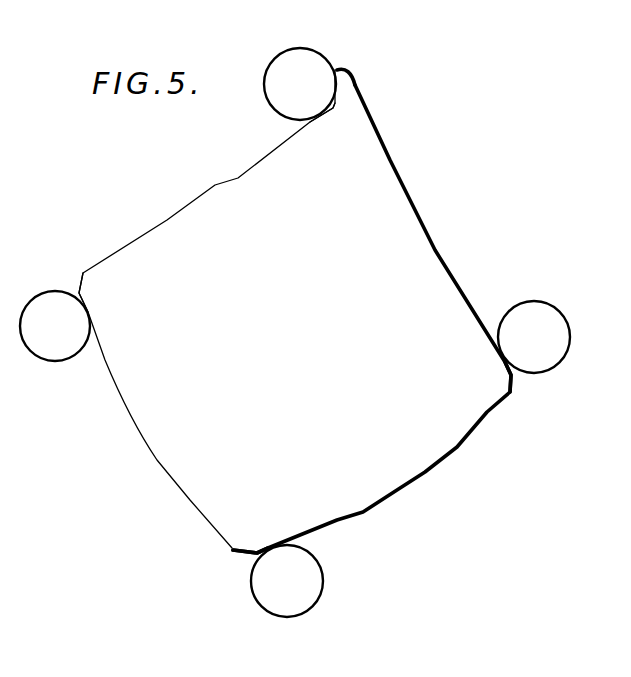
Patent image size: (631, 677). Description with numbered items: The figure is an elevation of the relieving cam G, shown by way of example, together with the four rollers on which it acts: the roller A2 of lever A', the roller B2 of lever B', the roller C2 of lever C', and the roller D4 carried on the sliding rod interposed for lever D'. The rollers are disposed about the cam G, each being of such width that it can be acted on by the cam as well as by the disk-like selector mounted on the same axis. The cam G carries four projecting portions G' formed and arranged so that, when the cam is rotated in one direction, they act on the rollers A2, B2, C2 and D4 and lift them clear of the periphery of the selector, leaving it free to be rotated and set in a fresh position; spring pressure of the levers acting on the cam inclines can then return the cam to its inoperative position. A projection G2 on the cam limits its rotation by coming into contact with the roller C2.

The roller C2 is at (282, 67).
The roller B2 is at (50, 307).
The roller D4 is at (527, 318).
The roller A2 is at (265, 577).
The relieving cam G is at (295, 311).
The projection G2 is at (348, 82).
The projecting portion G' is at (294, 327).